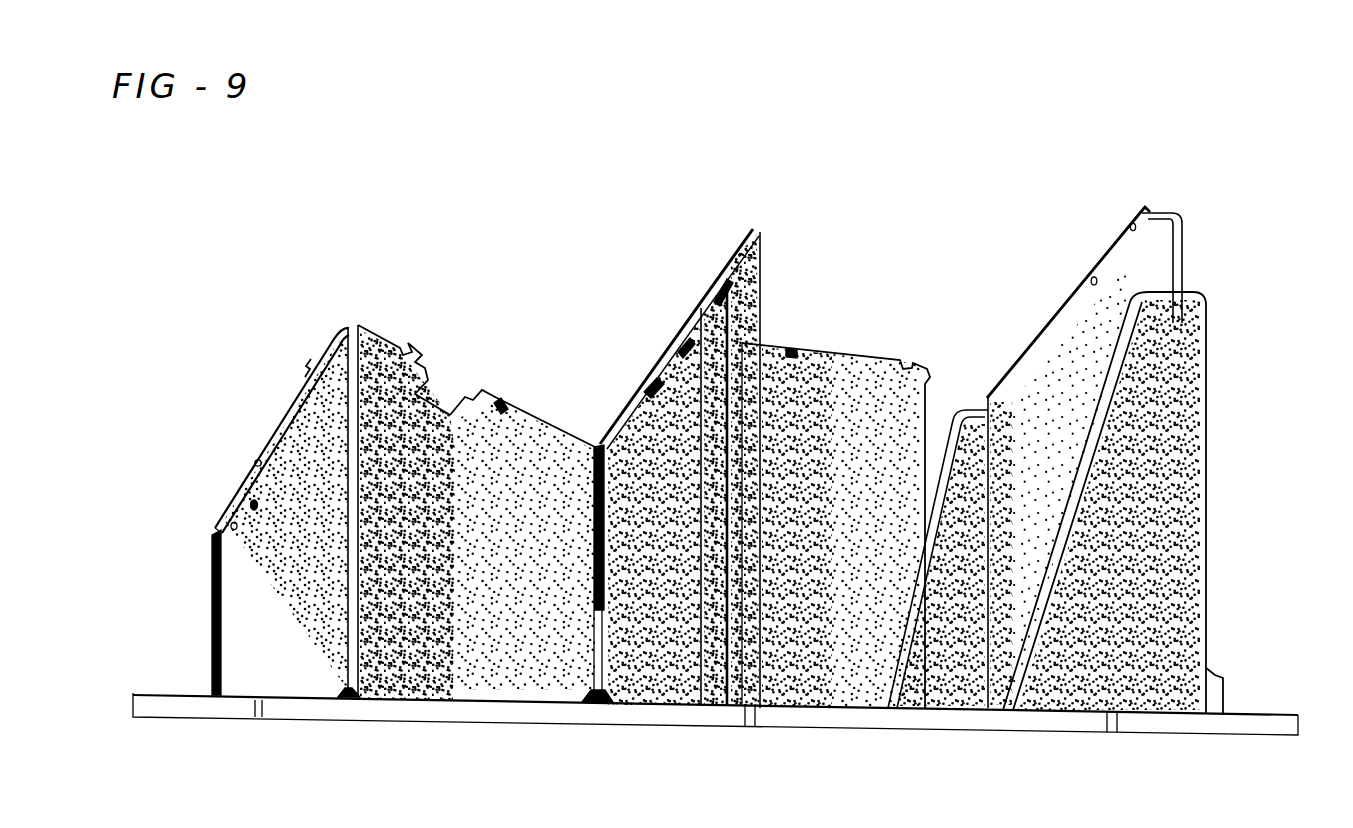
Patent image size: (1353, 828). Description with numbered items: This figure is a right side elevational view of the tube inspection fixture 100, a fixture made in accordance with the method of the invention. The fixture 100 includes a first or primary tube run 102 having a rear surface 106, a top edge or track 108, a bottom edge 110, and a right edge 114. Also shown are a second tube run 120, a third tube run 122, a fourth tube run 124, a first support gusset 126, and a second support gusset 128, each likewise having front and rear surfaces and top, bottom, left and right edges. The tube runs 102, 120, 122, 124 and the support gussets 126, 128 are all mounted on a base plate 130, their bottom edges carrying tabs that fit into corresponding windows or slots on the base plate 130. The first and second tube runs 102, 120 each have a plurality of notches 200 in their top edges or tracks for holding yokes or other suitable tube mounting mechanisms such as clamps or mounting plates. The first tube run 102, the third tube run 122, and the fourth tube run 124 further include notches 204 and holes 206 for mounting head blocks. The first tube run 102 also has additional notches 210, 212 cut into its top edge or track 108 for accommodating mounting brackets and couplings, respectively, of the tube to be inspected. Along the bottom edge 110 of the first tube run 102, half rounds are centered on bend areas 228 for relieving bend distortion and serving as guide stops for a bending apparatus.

The tube inspection fixture 100 is at (1060, 89).
The first tube run 102 is at (545, 450).
The rear surface 106 is at (540, 531).
The top edge or track 108 is at (384, 345).
The bottom edge 110 is at (529, 704).
The right edge 114 is at (212, 592).
The second tube run 120 is at (835, 378).
The third tube run 122 is at (1057, 333).
The fourth tube run 124 is at (1207, 668).
The first support gusset 126 is at (973, 410).
The second support gusset 128 is at (1206, 319).
The base plate 130 is at (882, 471).
The notches 200 is at (500, 402).
The notches 204 is at (258, 463).
The holes 206 is at (252, 505).
The additional notch 210 is at (723, 293).
The additional notch 212 is at (287, 418).
The bend areas 228 is at (350, 688).